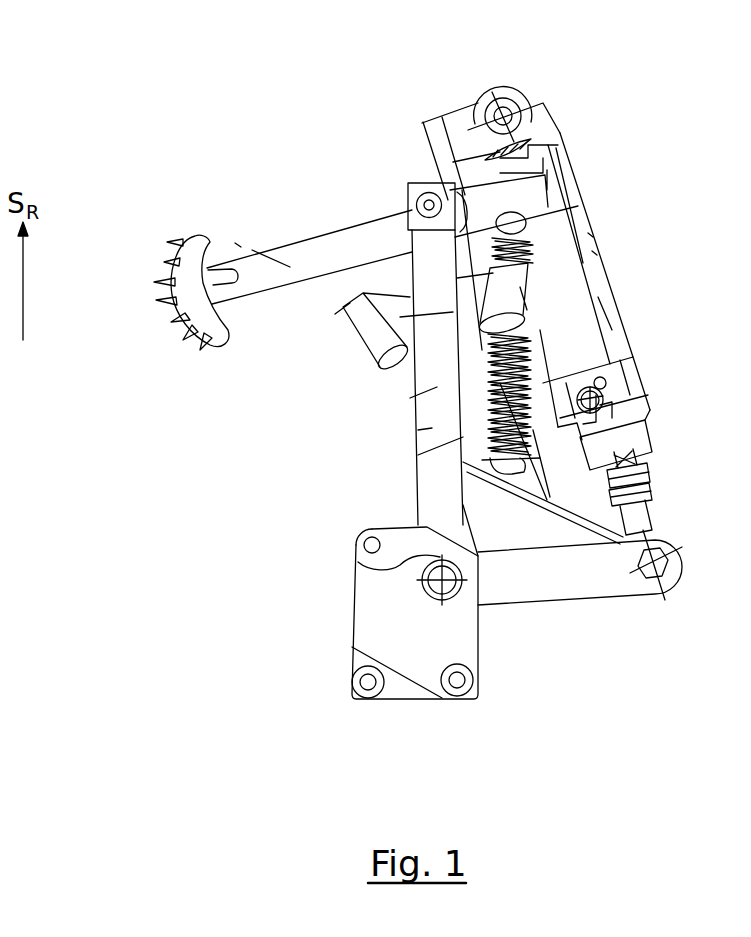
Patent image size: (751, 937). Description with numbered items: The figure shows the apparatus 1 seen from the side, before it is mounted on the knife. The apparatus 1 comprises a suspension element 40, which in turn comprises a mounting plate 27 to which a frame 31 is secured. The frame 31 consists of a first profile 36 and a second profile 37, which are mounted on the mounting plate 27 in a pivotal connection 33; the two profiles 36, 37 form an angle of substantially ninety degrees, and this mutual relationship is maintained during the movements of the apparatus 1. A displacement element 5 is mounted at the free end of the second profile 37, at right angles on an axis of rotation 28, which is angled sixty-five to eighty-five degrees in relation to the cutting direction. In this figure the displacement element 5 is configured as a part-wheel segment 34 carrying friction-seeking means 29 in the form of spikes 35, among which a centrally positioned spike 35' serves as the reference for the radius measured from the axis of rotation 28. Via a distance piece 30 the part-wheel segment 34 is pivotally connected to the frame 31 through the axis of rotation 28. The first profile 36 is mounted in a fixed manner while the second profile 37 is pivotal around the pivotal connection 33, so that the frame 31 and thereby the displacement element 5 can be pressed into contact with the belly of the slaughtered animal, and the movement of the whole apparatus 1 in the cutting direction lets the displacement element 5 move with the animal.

The apparatus 1 is at (418, 95).
The displacement element 5 is at (296, 228).
The mounting plate 27 is at (427, 623).
The axis of rotation 28 is at (418, 192).
The friction-seeking means 29 is at (154, 240).
The distance piece 30 is at (318, 258).
The frame 31 is at (458, 516).
The pivotal connection 33 is at (355, 570).
The part-wheel segment 34 is at (203, 242).
The spikes 35 is at (191, 379).
The centrally positioned spike 35' is at (111, 313).
The first profile 36 is at (592, 567).
The second profile 37 is at (430, 428).
The suspension element 40 is at (342, 499).